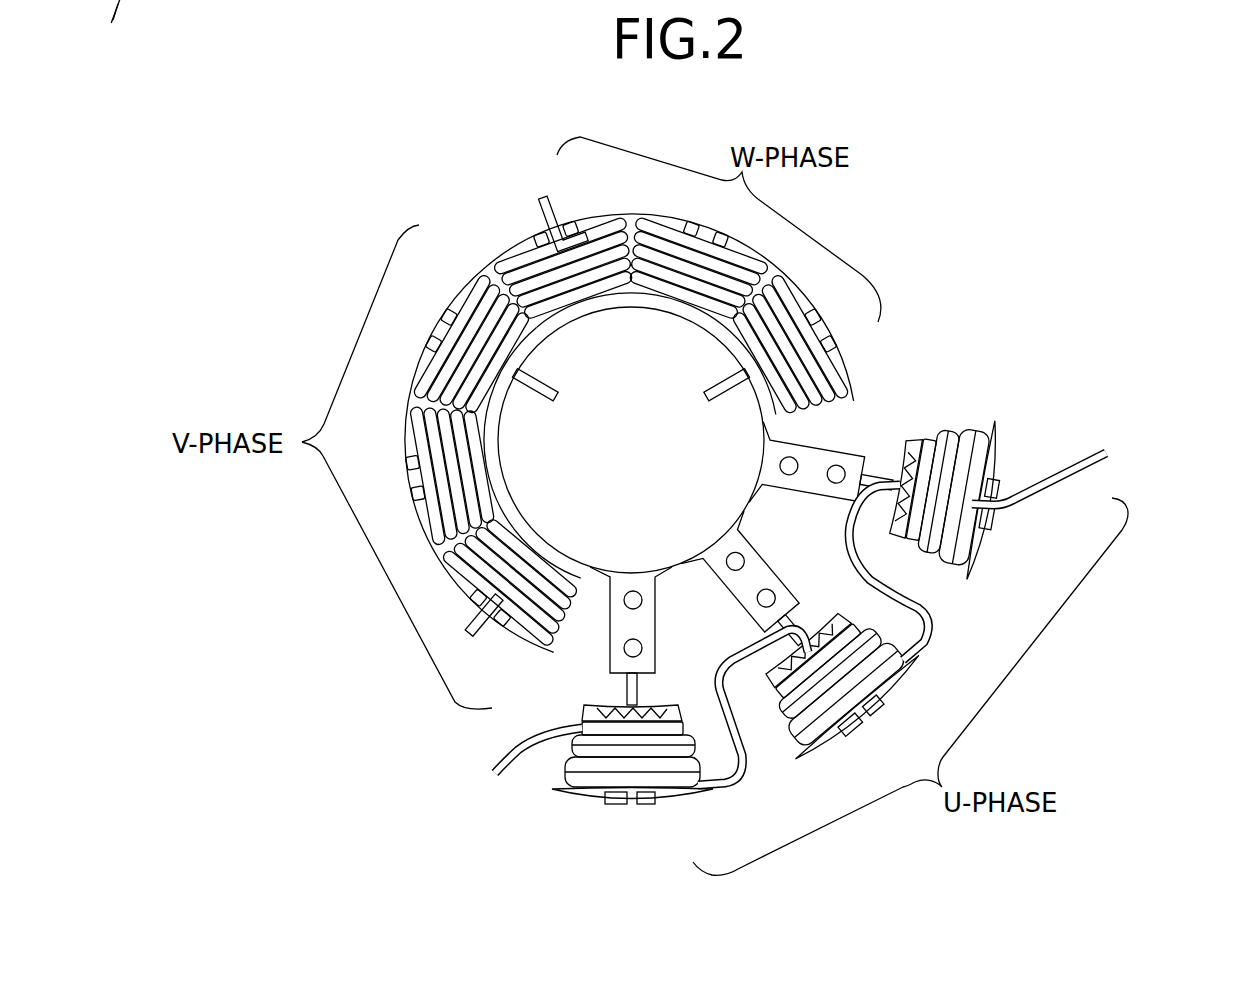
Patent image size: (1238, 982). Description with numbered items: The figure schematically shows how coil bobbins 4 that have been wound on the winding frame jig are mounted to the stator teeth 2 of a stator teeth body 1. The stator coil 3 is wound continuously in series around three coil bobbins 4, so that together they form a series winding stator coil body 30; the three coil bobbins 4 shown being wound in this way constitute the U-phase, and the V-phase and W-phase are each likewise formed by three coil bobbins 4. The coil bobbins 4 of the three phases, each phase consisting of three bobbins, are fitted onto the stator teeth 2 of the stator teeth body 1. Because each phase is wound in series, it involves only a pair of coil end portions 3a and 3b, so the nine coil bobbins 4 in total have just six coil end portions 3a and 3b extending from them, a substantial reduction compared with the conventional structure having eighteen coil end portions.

The stator teeth body 1 is at (852, 422).
The stator teeth 2 is at (618, 628).
The stator coil 3 is at (567, 770).
The coil end portion 3a is at (517, 742).
The coil end portion 3b is at (1088, 448).
The coil bobbin 4 is at (588, 800).
The series winding stator coil body 30 is at (942, 611).